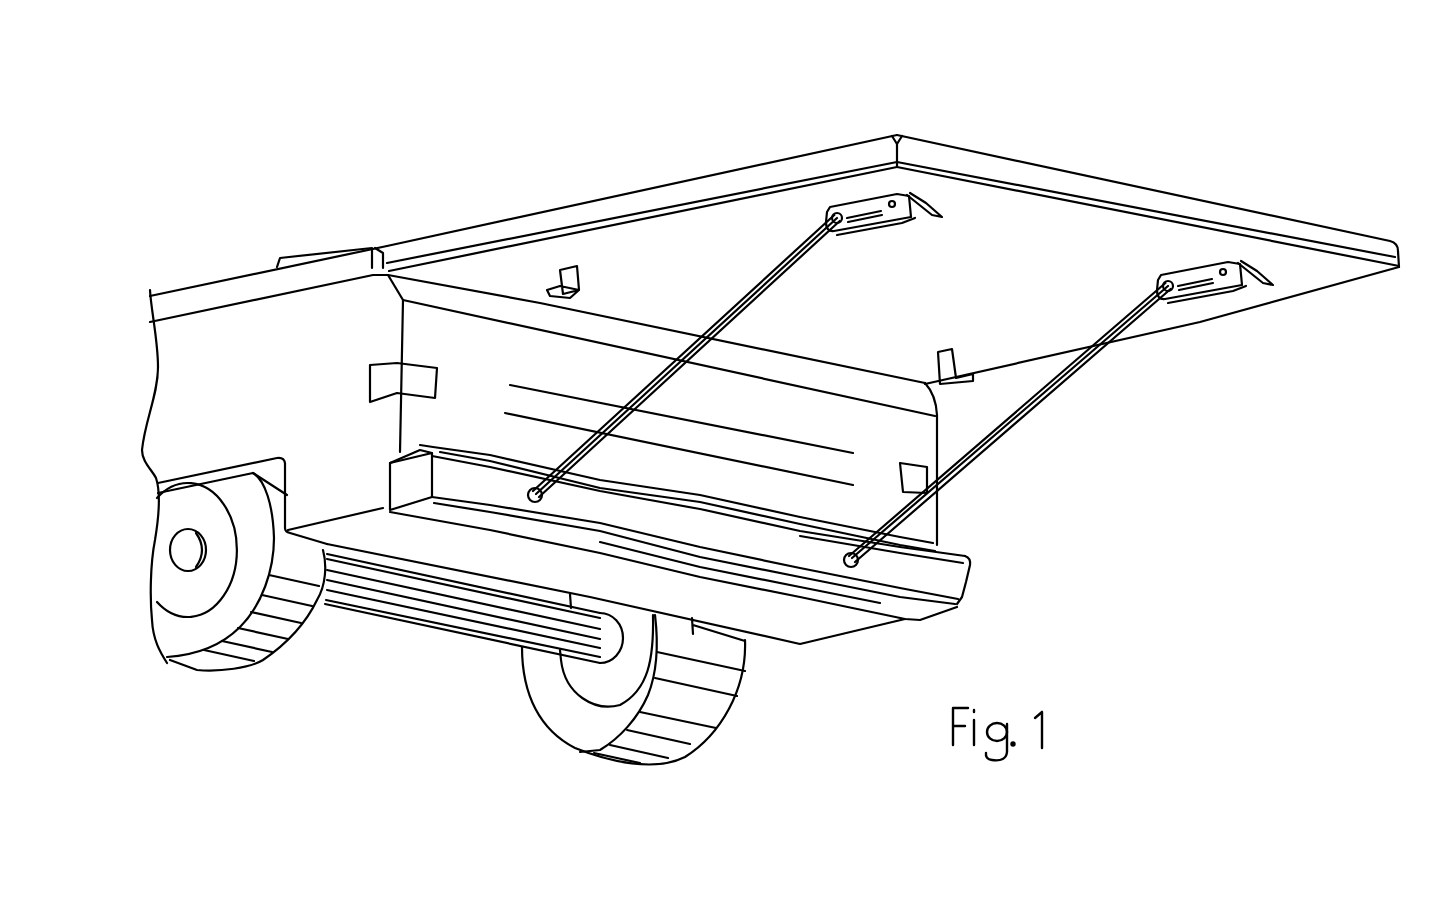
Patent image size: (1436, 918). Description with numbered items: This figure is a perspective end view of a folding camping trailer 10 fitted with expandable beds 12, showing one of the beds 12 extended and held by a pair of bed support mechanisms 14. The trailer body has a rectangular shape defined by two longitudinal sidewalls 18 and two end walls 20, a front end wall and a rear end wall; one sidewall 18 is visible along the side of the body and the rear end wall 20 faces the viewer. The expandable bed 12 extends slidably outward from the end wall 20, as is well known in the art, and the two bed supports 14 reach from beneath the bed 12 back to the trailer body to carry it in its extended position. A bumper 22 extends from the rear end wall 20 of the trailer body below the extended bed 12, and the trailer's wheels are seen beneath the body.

The folding camping trailer 10 is at (400, 210).
The expandable bed 12 is at (1403, 247).
The bed support mechanism 14 is at (836, 213).
The longitudinal sidewall 18 is at (291, 399).
The end wall 20 is at (784, 422).
The bumper 22 is at (965, 580).